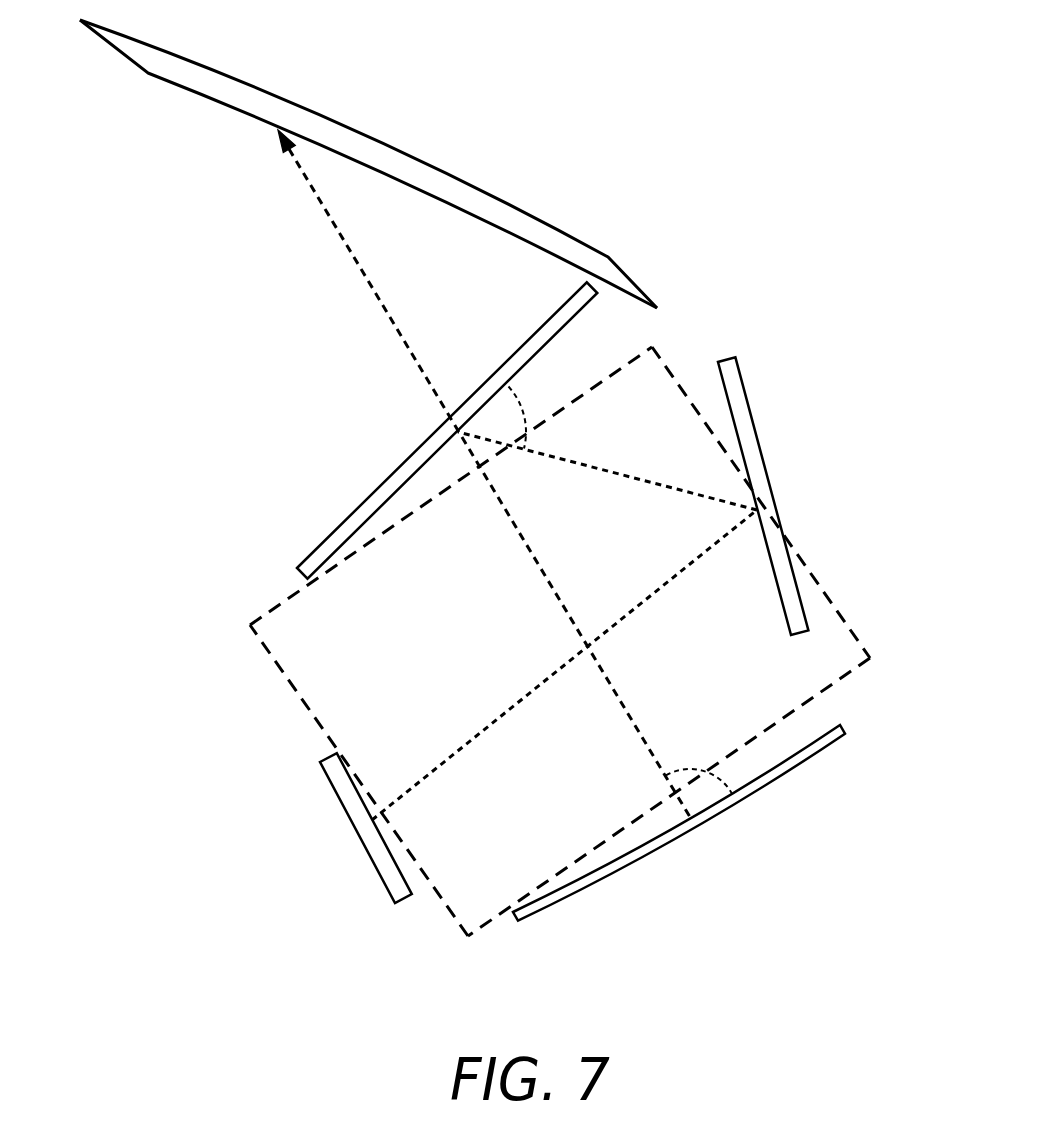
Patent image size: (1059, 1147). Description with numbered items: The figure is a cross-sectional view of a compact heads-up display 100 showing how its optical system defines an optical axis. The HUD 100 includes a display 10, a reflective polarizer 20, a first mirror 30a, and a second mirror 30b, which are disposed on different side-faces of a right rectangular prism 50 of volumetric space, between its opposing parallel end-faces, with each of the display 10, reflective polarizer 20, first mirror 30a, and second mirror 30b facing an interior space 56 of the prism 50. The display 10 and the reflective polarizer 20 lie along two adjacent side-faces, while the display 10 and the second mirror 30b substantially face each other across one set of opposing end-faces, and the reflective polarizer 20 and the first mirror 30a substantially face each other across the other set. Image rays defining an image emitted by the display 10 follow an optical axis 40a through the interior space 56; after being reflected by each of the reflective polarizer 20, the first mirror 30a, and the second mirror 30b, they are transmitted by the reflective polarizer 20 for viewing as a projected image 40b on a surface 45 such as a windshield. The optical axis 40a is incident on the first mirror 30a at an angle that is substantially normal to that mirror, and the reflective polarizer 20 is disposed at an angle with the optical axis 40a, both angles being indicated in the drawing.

The compact heads-up display 100 is at (288, 456).
The surface 45 is at (600, 210).
The right rectangular prism 50 is at (290, 681).
The interior space 56 is at (588, 787).
The reflective polarizer 20 is at (541, 326).
The first mirror 30a is at (846, 730).
The second mirror 30b is at (768, 475).
The display 10 is at (363, 847).
The optical axis 40a is at (489, 727).
The projected image 40b is at (273, 131).